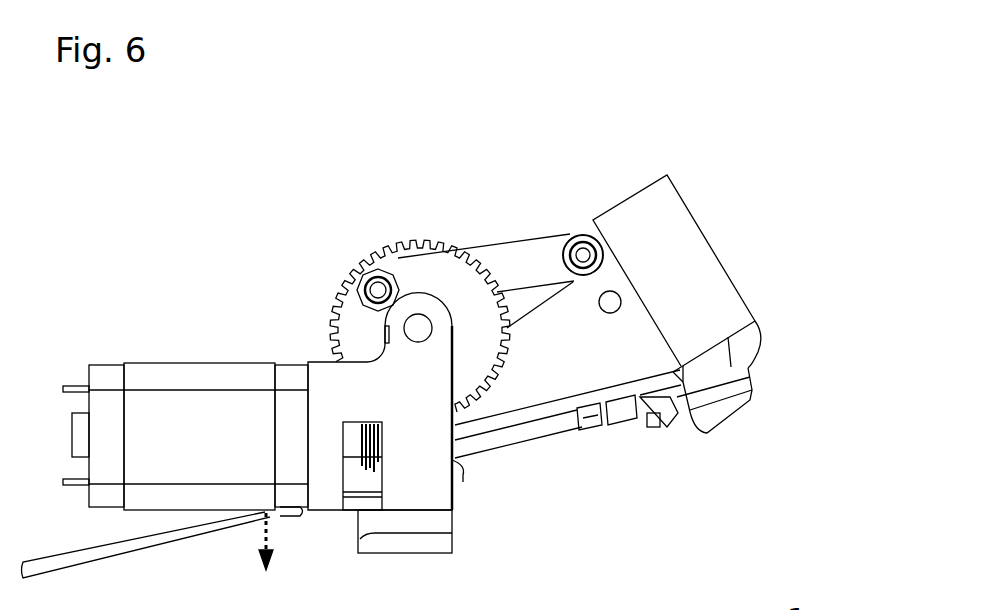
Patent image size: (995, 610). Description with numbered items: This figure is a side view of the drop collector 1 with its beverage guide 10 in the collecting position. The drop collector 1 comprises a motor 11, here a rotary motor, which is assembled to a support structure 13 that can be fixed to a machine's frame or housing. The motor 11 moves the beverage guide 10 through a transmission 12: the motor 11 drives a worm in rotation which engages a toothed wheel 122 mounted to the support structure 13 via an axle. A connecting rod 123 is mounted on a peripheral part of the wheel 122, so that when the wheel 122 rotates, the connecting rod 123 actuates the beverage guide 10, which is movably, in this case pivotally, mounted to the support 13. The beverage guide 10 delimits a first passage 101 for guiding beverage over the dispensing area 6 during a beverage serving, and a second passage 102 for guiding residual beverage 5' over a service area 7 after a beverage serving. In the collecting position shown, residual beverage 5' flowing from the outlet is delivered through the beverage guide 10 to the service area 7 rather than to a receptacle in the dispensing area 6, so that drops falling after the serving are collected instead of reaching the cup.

The drop collector 1 is at (620, 112).
The beverage guide 10 is at (668, 225).
The first passage 101 is at (732, 422).
The second passage 102 is at (283, 513).
The motor 11 is at (166, 379).
The transmission 12 is at (593, 182).
The wheel 122 is at (472, 313).
The connecting rod 123 is at (508, 267).
The support structure 13 is at (427, 492).
The residual beverage 5' is at (146, 550).
The service area 7 is at (262, 559).
The dispensing area 6 is at (723, 519).